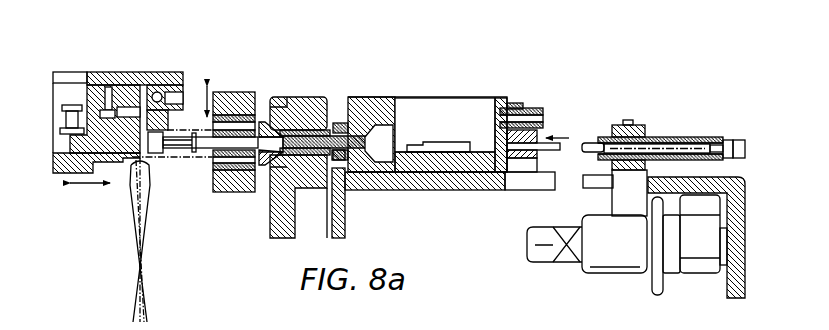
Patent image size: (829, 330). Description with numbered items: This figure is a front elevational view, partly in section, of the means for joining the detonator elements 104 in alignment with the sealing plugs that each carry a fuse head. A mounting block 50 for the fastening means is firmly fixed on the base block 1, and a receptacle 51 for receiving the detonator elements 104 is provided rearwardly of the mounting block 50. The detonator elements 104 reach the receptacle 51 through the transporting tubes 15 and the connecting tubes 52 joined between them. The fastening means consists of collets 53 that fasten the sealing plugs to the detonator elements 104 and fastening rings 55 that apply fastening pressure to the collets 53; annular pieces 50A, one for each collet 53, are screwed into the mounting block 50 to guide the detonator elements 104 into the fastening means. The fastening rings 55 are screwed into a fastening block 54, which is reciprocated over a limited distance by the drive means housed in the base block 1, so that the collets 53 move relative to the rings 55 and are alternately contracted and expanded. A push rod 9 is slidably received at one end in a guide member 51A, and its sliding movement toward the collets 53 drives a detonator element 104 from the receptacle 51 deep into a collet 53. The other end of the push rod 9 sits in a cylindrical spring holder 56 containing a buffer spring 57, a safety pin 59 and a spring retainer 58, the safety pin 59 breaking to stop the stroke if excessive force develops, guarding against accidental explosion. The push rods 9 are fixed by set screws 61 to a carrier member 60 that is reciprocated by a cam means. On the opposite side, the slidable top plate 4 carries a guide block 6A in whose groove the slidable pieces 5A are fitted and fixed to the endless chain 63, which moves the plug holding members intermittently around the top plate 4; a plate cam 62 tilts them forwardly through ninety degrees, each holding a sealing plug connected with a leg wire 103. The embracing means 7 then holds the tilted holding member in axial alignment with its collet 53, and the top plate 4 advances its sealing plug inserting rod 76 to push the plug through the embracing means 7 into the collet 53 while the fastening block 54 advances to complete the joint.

The base block 1 is at (408, 191).
The top plate 4 is at (58, 173).
The slidable piece 5A is at (128, 92).
The guide block 6A is at (106, 87).
The embracing means 7 is at (229, 92).
The push rod 9 is at (594, 141).
The transporting tube 15 is at (536, 108).
The mounting block 50 is at (363, 99).
The annular piece 50A is at (384, 172).
The receptacle 51 is at (443, 166).
The guide member 51A is at (522, 160).
The connecting tube 52 is at (513, 103).
The collet 53 is at (261, 166).
The fastening block 54 is at (288, 100).
The fastening ring 55 is at (318, 110).
The spring holder 56 is at (673, 137).
The buffer spring 57 is at (697, 137).
The spring retainer 58 is at (740, 139).
The safety pin 59 is at (730, 140).
The carrier member 60 is at (641, 125).
The set screw 61 is at (628, 120).
The plate cam 62 is at (156, 88).
The endless chain 63 is at (66, 105).
The sealing plug inserting rod 76 is at (205, 149).
The leg wire 103 is at (143, 238).
The detonator element 104 is at (439, 142).